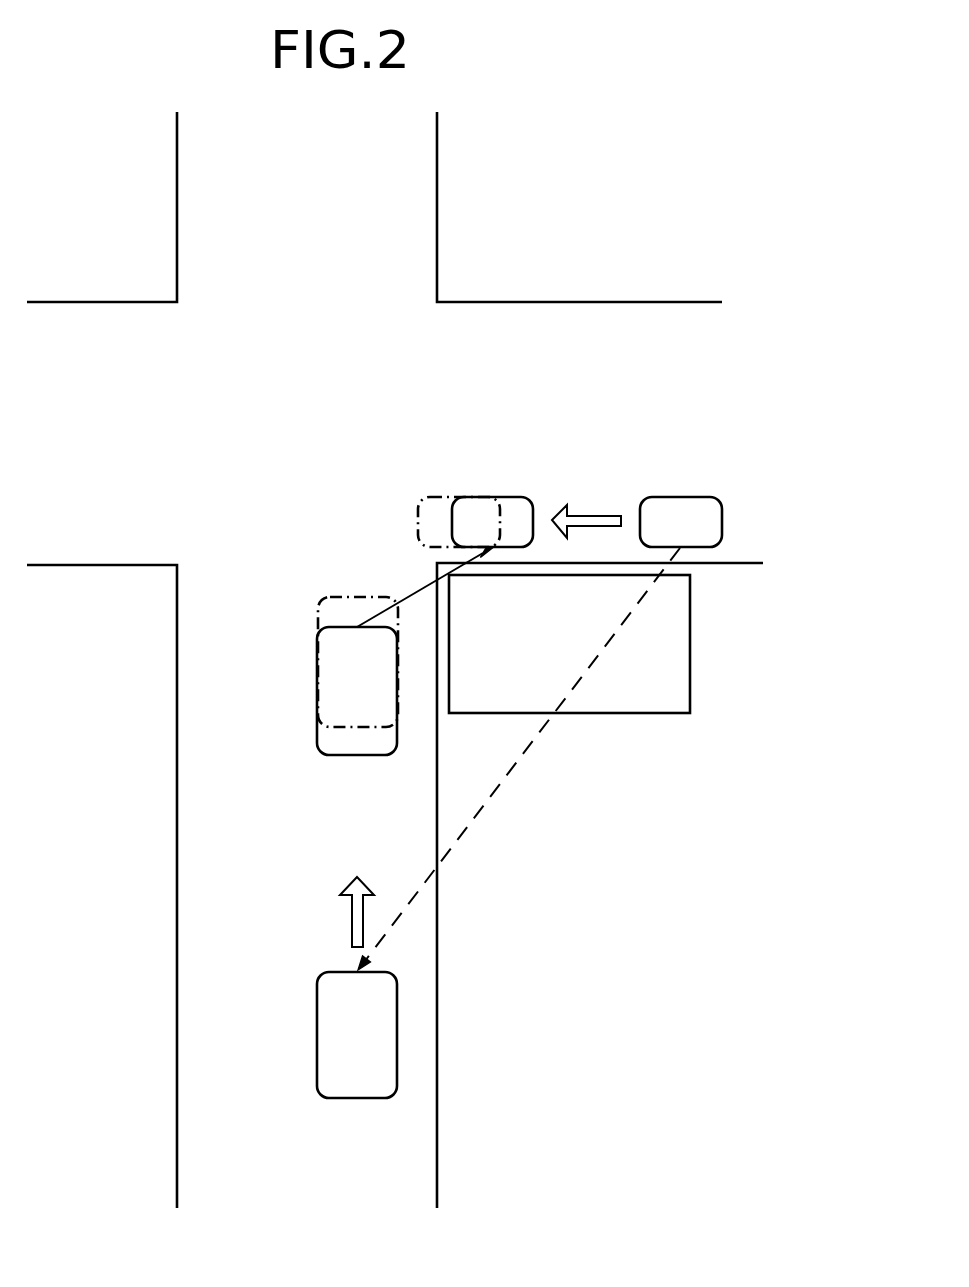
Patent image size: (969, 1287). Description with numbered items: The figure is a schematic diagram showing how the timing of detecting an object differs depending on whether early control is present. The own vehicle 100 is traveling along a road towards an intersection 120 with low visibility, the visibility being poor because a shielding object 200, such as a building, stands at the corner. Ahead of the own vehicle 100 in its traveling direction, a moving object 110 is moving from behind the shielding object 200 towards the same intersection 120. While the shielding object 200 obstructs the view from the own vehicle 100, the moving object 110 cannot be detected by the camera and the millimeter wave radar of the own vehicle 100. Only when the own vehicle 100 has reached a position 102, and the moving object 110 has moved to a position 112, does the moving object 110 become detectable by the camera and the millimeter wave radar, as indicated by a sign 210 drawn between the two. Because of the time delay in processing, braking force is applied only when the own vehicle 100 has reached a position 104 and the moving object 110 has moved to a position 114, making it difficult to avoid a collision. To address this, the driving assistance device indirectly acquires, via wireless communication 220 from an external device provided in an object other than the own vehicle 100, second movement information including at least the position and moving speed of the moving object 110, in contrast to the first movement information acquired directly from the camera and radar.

The own vehicle 100 is at (317, 1023).
The position 102 is at (317, 742).
The position 104 is at (318, 620).
The moving object 110 is at (673, 497).
The position 112 is at (507, 497).
The position 114 is at (433, 497).
The intersection 120 is at (313, 423).
The shielding object 200 is at (690, 652).
The sign 210 is at (400, 600).
The wireless communication 220 is at (497, 787).